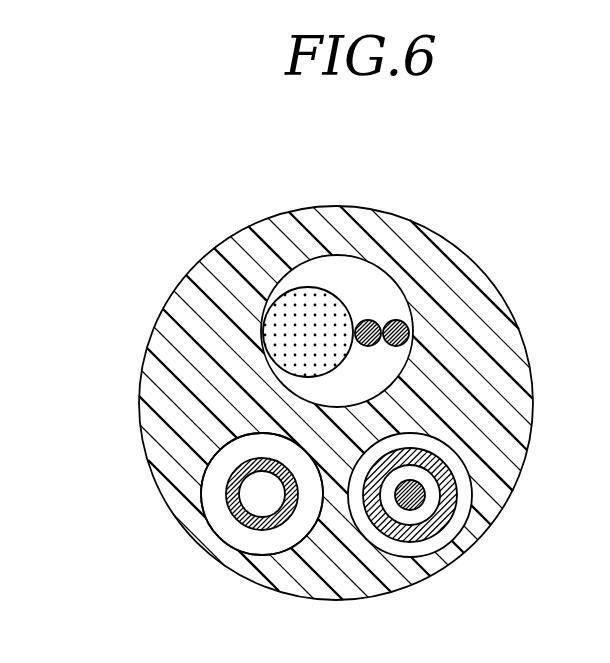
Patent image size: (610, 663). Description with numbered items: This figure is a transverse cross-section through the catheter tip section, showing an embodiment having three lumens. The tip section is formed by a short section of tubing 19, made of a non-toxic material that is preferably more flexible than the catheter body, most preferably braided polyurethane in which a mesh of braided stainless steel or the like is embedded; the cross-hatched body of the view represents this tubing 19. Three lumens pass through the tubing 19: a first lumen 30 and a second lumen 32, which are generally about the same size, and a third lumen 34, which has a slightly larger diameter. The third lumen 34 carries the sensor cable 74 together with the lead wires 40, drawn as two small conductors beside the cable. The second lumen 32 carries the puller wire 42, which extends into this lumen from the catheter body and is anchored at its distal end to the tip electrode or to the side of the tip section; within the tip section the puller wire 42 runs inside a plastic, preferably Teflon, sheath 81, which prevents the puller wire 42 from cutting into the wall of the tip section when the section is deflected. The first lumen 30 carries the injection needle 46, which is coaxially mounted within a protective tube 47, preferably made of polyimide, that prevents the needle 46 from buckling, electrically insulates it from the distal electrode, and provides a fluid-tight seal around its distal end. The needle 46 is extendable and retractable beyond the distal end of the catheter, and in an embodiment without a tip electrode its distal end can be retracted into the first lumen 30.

The tubing 19 is at (472, 378).
The third lumen 34 is at (340, 278).
The sensor cable 74 is at (293, 323).
The lead wires 40 is at (398, 318).
The second lumen 32 is at (248, 543).
The protective tube 47 is at (205, 470).
The injection needle 46 is at (240, 497).
The first lumen 30 is at (433, 545).
The sheath 81 is at (457, 492).
The puller wire 42 is at (408, 503).